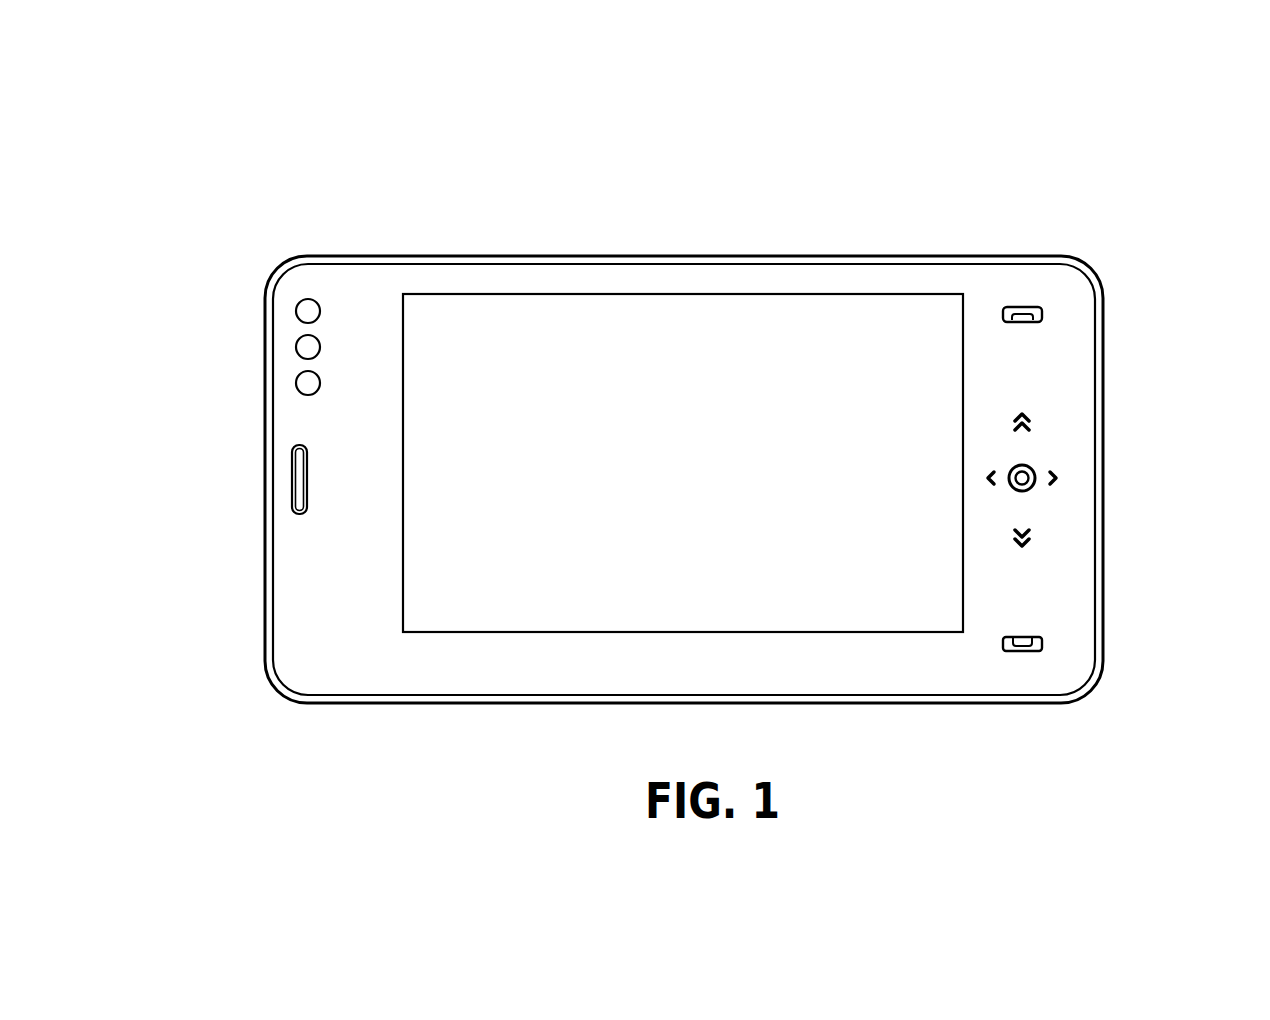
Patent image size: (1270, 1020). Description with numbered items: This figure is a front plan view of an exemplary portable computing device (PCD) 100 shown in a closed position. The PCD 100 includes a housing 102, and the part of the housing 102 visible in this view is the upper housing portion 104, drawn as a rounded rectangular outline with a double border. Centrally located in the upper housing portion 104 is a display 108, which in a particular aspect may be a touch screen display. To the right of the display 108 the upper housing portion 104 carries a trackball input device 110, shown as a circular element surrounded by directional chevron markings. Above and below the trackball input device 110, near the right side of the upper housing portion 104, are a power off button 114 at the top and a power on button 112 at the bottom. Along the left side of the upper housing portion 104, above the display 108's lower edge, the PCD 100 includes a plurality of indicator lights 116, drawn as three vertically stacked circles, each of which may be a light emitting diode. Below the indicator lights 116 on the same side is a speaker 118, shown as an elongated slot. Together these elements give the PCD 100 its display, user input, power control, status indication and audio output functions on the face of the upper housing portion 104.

The portable computing device 100 is at (1160, 190).
The housing 102 is at (306, 256).
The upper housing portion 104 is at (672, 270).
The display 108 is at (686, 610).
The trackball input device 110 is at (1032, 486).
The power on button 112 is at (1045, 648).
The power off button 114 is at (1040, 310).
The indicator lights 116 is at (297, 290).
The speaker 118 is at (297, 484).